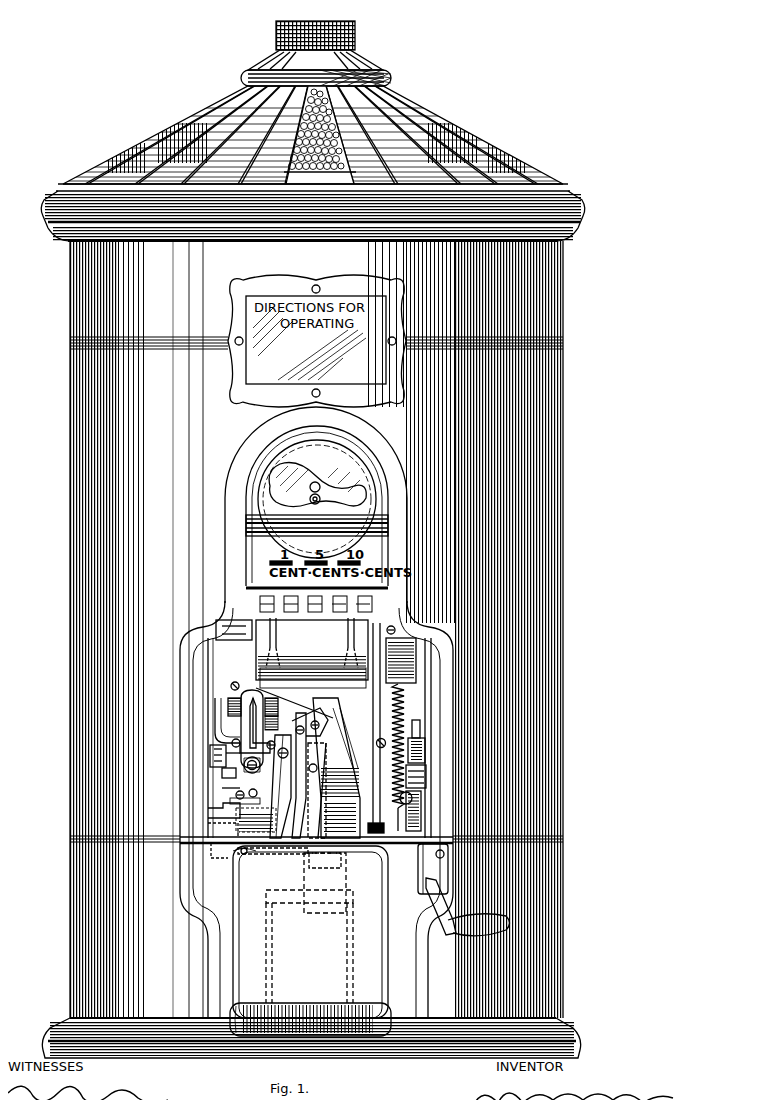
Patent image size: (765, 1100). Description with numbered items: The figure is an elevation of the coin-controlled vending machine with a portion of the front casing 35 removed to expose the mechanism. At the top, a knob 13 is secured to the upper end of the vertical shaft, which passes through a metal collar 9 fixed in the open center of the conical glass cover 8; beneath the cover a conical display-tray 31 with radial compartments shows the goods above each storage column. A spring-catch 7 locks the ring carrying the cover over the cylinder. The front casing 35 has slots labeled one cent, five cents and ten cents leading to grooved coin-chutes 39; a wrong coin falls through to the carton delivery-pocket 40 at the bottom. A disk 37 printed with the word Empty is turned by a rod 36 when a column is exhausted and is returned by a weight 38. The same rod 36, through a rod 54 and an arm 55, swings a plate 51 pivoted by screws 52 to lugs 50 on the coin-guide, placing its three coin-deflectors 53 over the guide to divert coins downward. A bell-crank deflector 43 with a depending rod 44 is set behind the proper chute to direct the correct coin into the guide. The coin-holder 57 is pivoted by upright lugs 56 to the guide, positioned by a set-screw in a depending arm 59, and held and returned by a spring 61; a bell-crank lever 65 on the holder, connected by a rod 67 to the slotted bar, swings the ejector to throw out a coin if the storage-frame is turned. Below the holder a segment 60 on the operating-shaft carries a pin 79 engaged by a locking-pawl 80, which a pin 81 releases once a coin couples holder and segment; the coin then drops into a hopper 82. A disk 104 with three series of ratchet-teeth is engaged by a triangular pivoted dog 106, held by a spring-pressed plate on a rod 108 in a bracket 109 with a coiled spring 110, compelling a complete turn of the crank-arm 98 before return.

The knob 13 is at (347, 26).
The metal collar 9 is at (270, 52).
The conical glass cover 8 is at (215, 93).
The conical display-tray 31 is at (370, 144).
The disk 37 is at (317, 499).
The rod 36 is at (338, 488).
The coin-chutes 39 is at (258, 598).
The screws 52 is at (200, 618).
The arm 55 is at (388, 609).
The plate 51 is at (280, 643).
The coin-deflectors 53 is at (349, 643).
The lugs 50 is at (234, 641).
The deflector 43 is at (312, 669).
The upright lugs 56 is at (218, 697).
The coin-holder 57 is at (216, 730).
The depending arm 59 is at (262, 729).
The bell-crank lever 65 is at (281, 744).
The depending rod 44 is at (299, 773).
The locking-pawl 80 is at (204, 757).
The rod 54 is at (376, 740).
The rod 108 is at (410, 757).
The bracket 109 is at (418, 740).
The coiled spring 110 is at (418, 768).
The triangular pivoted dog 106 is at (414, 796).
The spring 61 is at (242, 788).
The weight 38 is at (257, 774).
The pin 81 is at (212, 777).
The rod 67 is at (308, 790).
The pin 79 is at (200, 804).
The segment 60 is at (255, 843).
The hopper 82 is at (240, 843).
The spring-catch 7 is at (219, 851).
The disk 104 is at (408, 838).
The crank-arm 98 is at (436, 898).
The front casing 35 is at (310, 932).
The carton delivery-pocket 40 is at (303, 1000).